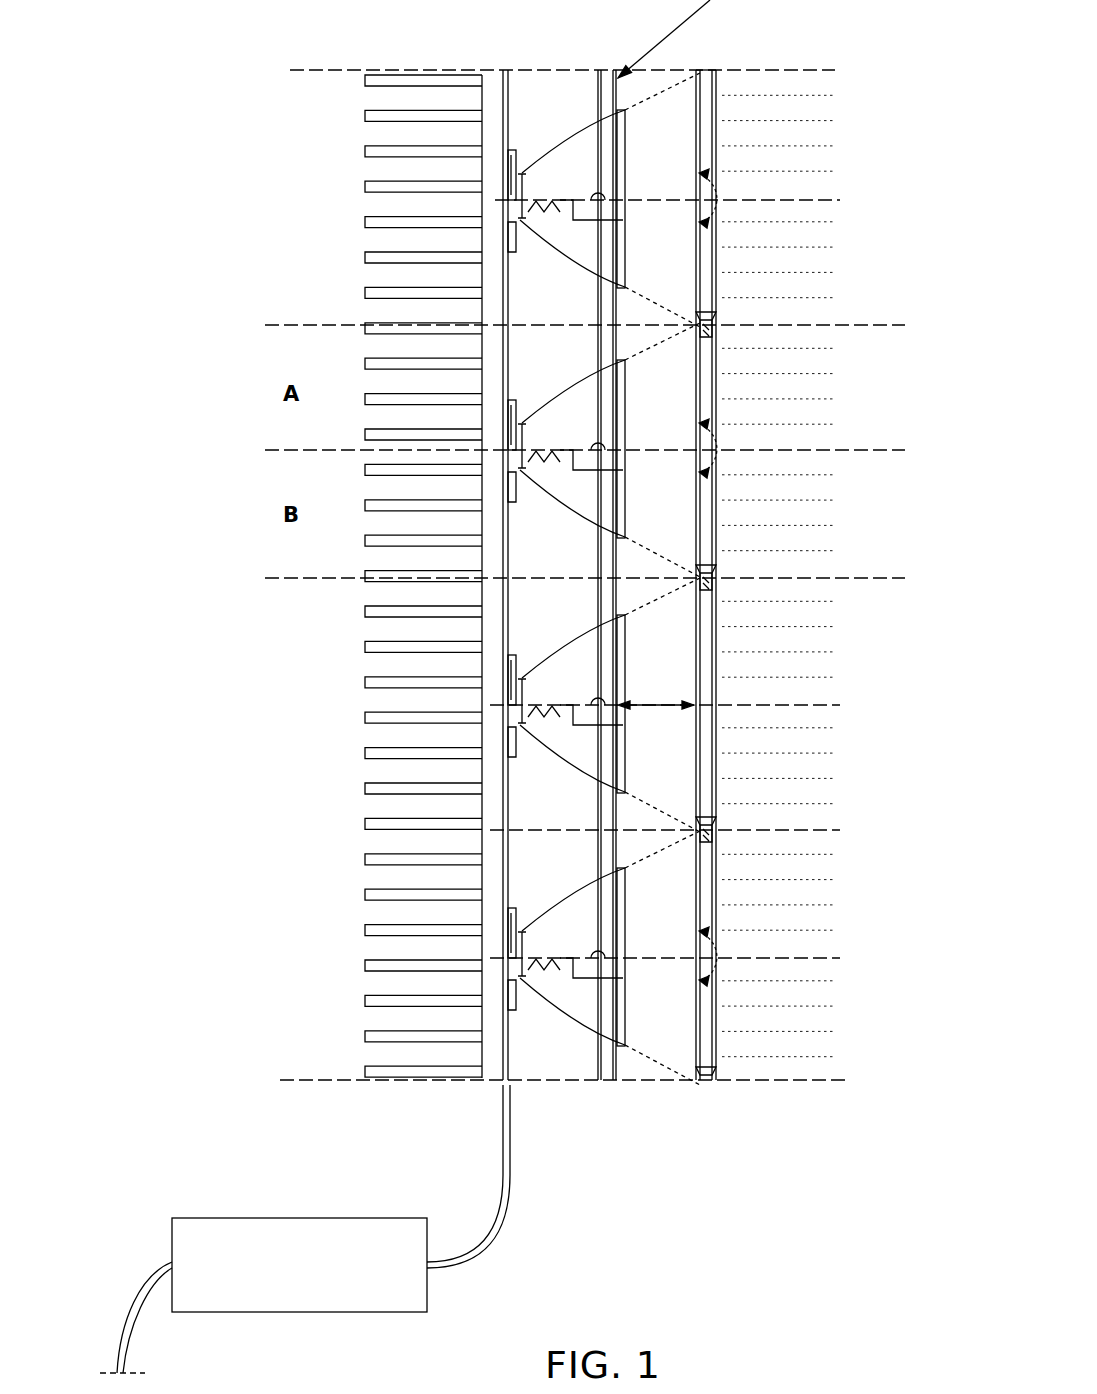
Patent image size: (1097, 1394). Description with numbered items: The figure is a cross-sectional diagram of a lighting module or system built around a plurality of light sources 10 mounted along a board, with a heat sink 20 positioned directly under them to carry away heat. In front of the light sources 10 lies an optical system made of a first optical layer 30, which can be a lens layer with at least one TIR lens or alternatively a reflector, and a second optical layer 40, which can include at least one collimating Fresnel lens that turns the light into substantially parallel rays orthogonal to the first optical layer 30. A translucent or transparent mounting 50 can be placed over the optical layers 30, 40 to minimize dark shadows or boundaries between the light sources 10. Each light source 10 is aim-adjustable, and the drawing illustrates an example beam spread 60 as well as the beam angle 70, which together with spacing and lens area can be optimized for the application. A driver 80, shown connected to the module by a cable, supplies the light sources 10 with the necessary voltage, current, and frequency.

The light source 10 is at (505, 200).
The heat sink 20 is at (380, 112).
The first optical layer 30 is at (578, 162).
The second optical layer 40 is at (722, 281).
The mounting 50 is at (716, 70).
The beam spread 60 is at (733, 343).
The beam angle 70 is at (670, 668).
The driver 80 is at (262, 1212).